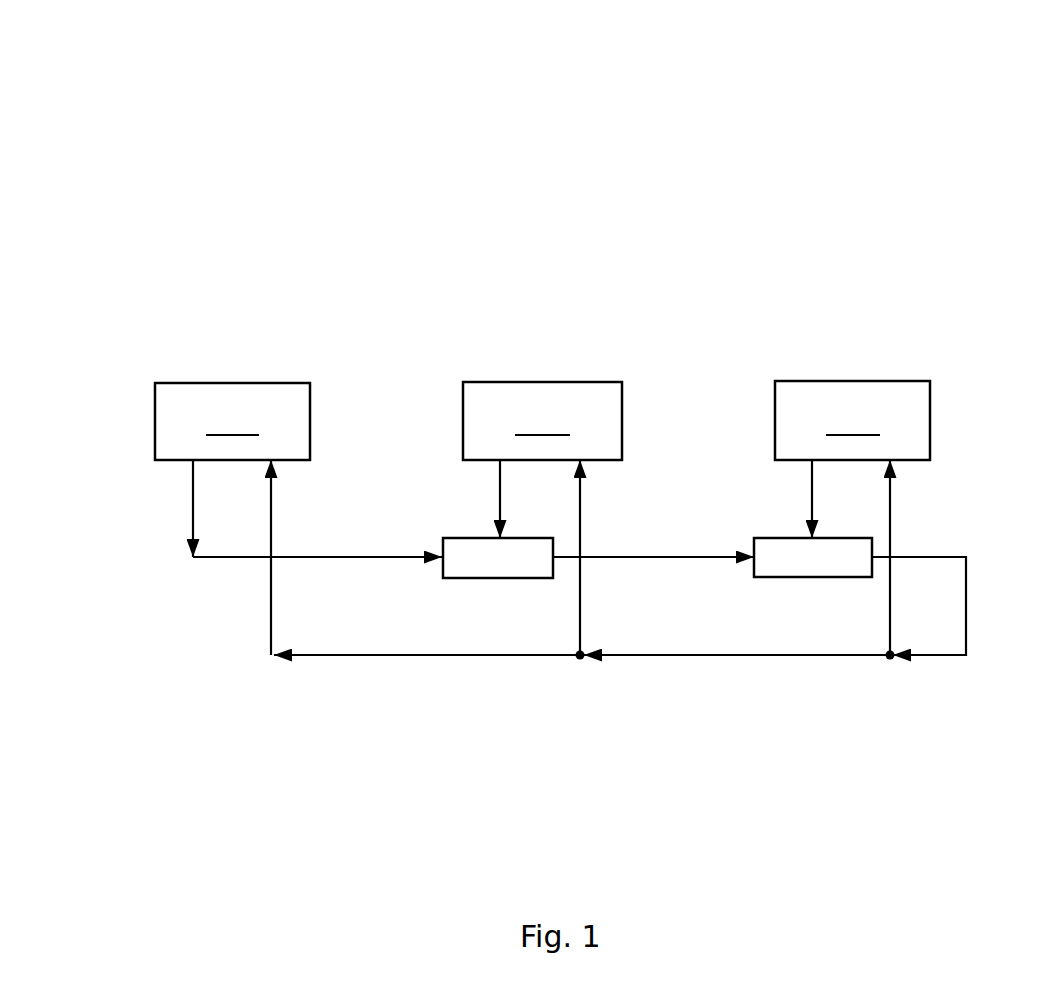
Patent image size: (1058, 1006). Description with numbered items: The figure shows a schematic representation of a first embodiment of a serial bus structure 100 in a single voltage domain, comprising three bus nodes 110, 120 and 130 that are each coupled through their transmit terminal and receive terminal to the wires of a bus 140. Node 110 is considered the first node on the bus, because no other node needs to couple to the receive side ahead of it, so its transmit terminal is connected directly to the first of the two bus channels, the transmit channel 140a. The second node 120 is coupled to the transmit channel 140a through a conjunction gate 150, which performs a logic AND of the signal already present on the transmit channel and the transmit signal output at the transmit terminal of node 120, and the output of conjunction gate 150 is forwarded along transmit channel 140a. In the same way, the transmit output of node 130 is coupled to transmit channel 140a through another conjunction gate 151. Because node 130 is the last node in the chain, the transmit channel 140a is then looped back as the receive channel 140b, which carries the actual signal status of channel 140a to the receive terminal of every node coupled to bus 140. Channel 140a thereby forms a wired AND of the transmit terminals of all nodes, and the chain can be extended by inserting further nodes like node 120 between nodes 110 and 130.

The serial bus structure 100 is at (550, 150).
The first bus node 110 is at (239, 436).
The second bus node 120 is at (546, 435).
The third bus node 130 is at (856, 435).
The bus 140 is at (271, 577).
The transmit channel 140a is at (188, 523).
The receive channel 140b is at (812, 656).
The conjunction gate 150 is at (463, 579).
The conjunction gate 151 is at (790, 578).